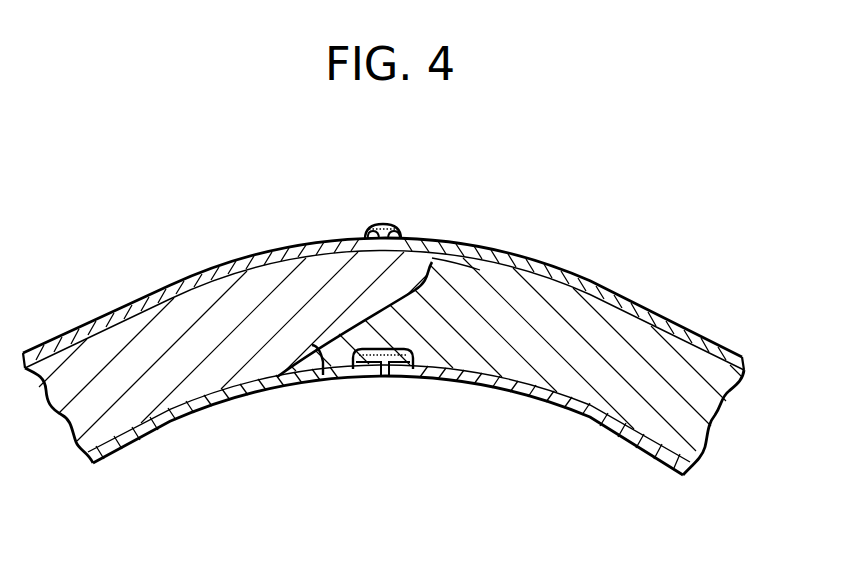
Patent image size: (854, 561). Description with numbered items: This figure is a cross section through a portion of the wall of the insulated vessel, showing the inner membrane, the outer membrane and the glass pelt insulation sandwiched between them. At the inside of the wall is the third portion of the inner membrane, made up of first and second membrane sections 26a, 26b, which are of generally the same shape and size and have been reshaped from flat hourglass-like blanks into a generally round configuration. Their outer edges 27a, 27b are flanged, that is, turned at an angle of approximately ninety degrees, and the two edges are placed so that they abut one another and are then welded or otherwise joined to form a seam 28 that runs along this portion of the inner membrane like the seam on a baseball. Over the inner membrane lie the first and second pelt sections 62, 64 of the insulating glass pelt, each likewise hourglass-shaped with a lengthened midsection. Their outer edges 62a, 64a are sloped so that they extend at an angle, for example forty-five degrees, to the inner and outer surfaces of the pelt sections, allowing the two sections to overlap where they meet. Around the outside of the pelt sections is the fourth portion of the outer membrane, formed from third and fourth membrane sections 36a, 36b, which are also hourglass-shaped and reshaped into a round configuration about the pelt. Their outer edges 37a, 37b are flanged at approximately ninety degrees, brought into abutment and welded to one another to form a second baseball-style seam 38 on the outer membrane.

The first membrane section 26a is at (266, 388).
The second membrane section 26b is at (546, 398).
The outer edge of first section 27a is at (353, 370).
The outer edge of second section 27b is at (411, 370).
The seam 28 is at (356, 364).
The third membrane section 36a is at (238, 255).
The fourth membrane section 36b is at (573, 279).
The outer edge of third section 37a is at (370, 233).
The outer edge of fourth section 37b is at (398, 234).
The seam 38 is at (379, 225).
The first pelt section 62 is at (153, 400).
The outer edge of first pelt section 62a is at (323, 360).
The second pelt section 64 is at (693, 347).
The outer edge of second pelt section 64a is at (432, 262).